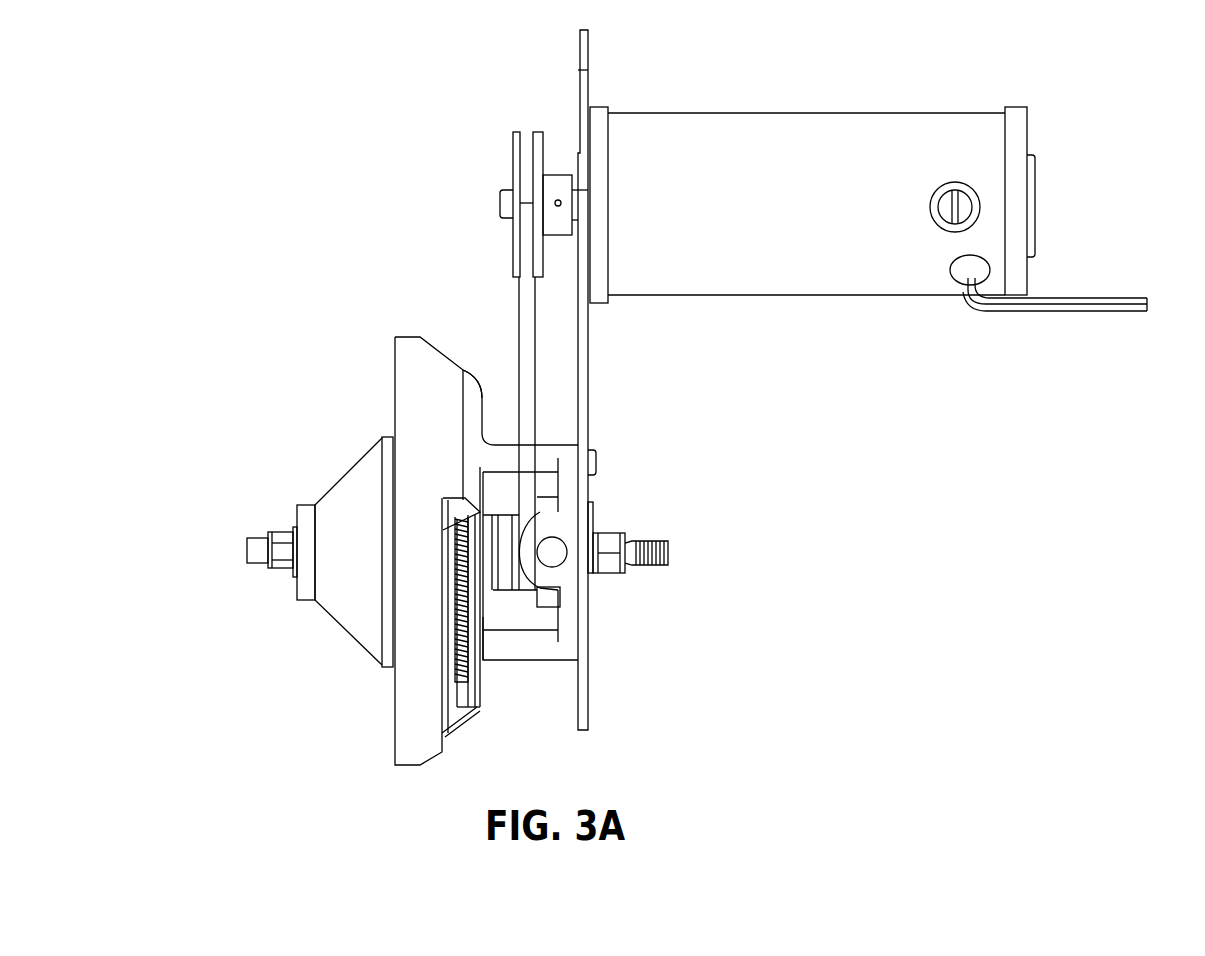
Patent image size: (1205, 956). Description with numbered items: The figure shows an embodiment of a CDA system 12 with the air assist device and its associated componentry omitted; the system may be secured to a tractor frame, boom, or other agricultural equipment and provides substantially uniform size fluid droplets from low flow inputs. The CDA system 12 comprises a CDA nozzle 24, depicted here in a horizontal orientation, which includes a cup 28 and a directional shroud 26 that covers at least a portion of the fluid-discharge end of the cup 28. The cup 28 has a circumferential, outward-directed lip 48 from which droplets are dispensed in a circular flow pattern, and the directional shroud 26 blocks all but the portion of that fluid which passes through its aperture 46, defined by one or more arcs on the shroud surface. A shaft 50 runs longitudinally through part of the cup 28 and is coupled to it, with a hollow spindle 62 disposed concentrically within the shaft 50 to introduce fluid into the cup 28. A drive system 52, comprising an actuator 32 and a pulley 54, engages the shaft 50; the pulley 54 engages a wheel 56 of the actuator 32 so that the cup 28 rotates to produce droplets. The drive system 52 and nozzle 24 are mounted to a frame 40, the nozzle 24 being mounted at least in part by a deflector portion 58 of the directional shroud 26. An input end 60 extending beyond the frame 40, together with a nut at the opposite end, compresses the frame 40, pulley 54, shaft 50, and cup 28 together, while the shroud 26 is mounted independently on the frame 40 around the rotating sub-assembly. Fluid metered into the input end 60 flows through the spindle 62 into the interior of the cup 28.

The CDA system 12 is at (236, 174).
The CDA nozzle 24 is at (722, 453).
The directional shroud 26 is at (394, 337).
The cup 28 is at (347, 470).
The actuator 32 is at (810, 117).
The frame 40 is at (578, 70).
The aperture 46 is at (418, 613).
The lip 48 is at (465, 678).
The shaft 50 is at (487, 578).
The drive system 52 is at (483, 143).
The pulley 54 is at (517, 317).
The wheel 56 is at (513, 237).
The deflector portion 58 is at (483, 398).
The input end 60 is at (692, 554).
The spindle 62 is at (247, 538).